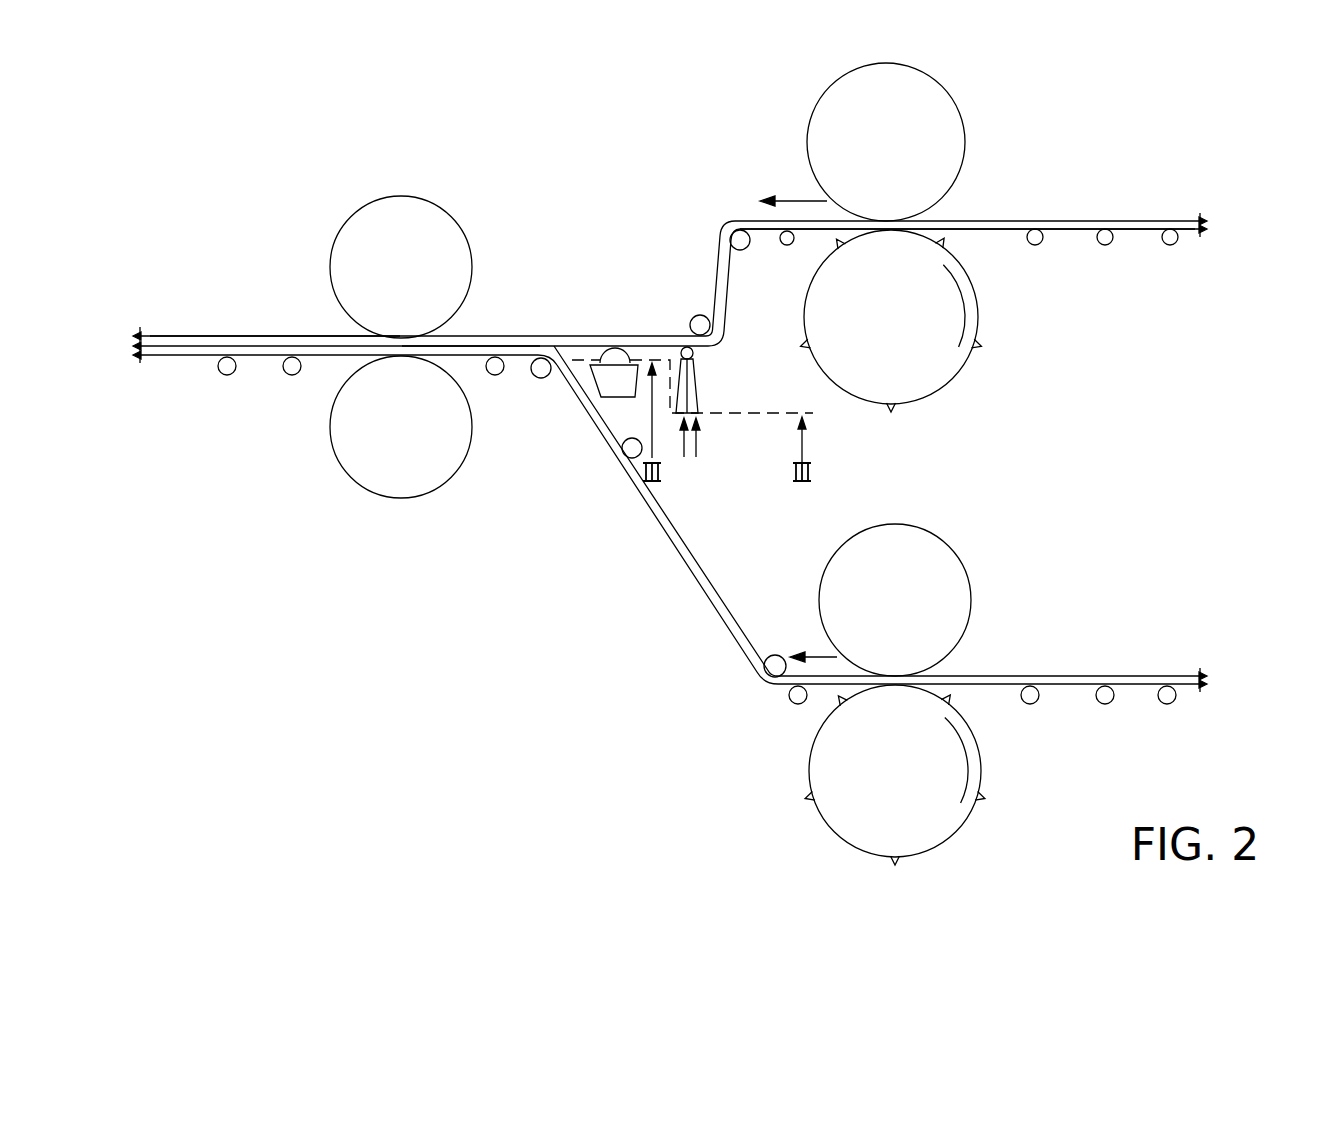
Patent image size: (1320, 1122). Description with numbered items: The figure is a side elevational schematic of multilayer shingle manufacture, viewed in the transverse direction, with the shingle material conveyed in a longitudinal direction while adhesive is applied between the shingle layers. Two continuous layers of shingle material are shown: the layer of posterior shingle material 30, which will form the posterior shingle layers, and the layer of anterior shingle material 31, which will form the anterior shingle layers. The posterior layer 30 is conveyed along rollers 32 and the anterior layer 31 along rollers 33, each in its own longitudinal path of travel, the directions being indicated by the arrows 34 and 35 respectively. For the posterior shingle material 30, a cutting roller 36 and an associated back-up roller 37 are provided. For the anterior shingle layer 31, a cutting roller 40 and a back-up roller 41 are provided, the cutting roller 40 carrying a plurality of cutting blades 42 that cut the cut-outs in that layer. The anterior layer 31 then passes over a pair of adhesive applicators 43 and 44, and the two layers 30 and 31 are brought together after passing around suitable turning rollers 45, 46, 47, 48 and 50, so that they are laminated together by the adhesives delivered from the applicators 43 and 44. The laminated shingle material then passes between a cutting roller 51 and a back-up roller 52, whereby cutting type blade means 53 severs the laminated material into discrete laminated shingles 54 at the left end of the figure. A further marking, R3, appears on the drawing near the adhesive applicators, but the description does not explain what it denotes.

The continuous layer of posterior shingle material 30 is at (678, 557).
The continuous layer of anterior shingle material 31 is at (1097, 222).
The rollers 32 is at (790, 695).
The rollers 33 is at (787, 245).
The arrow 34 is at (822, 653).
The arrow 35 is at (791, 178).
The cutting roller 36 is at (904, 775).
The back-up roller 37 is at (945, 585).
The cutting roller 40 is at (923, 380).
The back-up roller 41 is at (937, 112).
The cutting blades 42 is at (978, 347).
The adhesive applicator 43 is at (695, 380).
The adhesive applicator 44 is at (592, 385).
The turning roller 45 is at (773, 657).
The turning roller 46 is at (740, 250).
The turning roller 47 is at (698, 323).
The turning roller 48 is at (630, 450).
The turning roller 50 is at (535, 370).
The cutting roller 51 is at (358, 437).
The back-up roller 52 is at (362, 230).
The cutting type blade means 53 is at (433, 337).
The discrete laminated shingles 54 is at (217, 333).
The roll / reservoir R3 is at (617, 350).